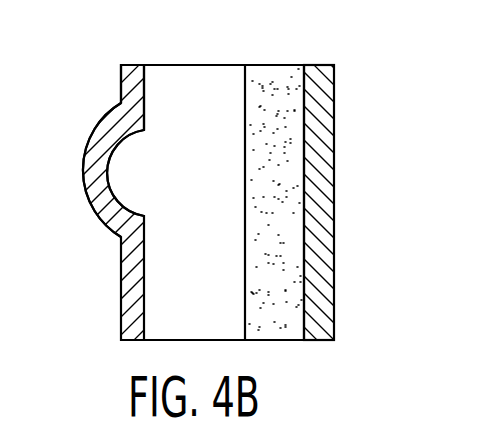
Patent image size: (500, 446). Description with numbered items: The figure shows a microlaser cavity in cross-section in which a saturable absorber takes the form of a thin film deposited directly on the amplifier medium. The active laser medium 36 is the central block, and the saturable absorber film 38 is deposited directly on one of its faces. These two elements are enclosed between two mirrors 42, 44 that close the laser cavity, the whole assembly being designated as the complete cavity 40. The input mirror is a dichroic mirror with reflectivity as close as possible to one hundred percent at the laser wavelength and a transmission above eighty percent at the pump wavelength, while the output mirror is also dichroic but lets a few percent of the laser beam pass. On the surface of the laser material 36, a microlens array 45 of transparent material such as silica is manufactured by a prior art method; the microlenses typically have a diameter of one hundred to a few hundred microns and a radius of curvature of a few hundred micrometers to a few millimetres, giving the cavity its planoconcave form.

The active laser medium 36 is at (178, 75).
The saturable absorber film 38 is at (268, 73).
The complete cavity 40 is at (113, 278).
The mirror 42 is at (121, 93).
The mirror 44 is at (333, 117).
The microlens array 45 is at (83, 188).